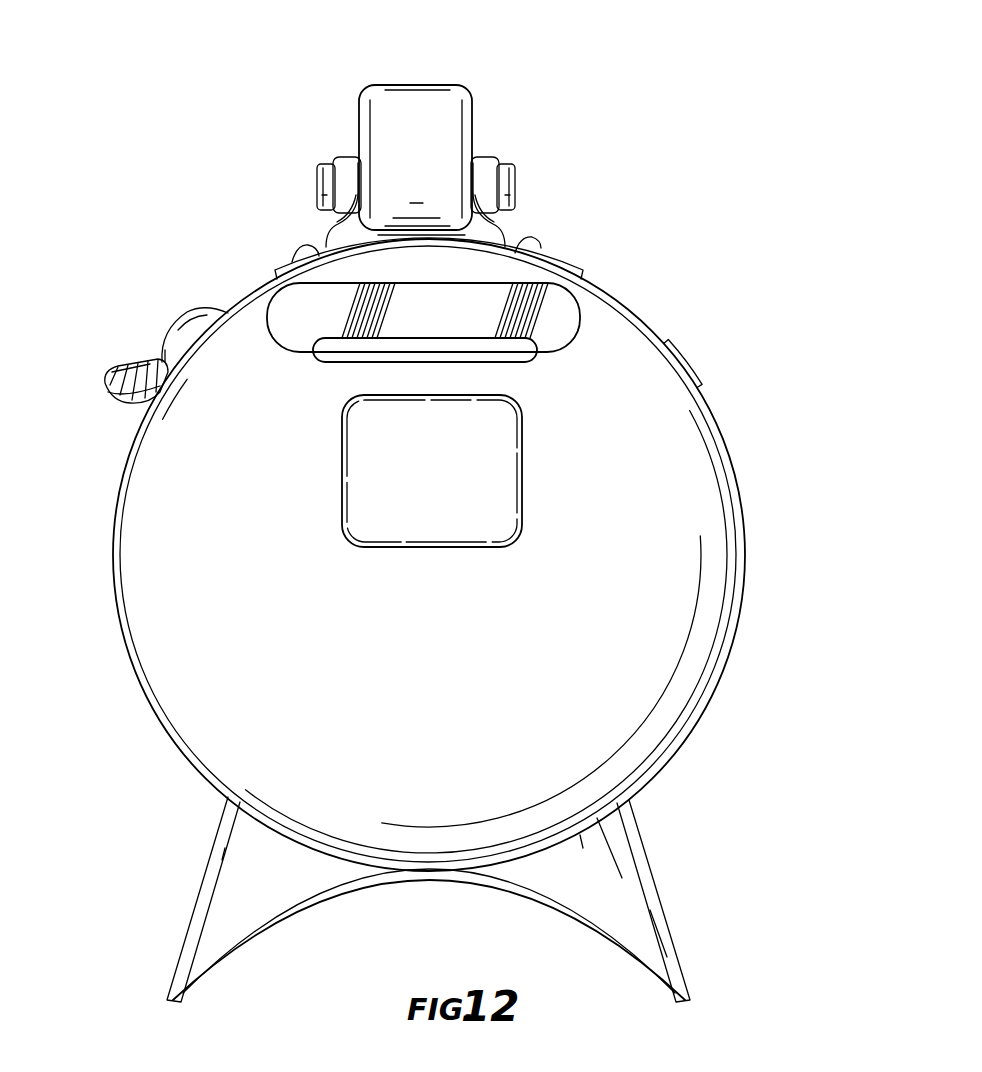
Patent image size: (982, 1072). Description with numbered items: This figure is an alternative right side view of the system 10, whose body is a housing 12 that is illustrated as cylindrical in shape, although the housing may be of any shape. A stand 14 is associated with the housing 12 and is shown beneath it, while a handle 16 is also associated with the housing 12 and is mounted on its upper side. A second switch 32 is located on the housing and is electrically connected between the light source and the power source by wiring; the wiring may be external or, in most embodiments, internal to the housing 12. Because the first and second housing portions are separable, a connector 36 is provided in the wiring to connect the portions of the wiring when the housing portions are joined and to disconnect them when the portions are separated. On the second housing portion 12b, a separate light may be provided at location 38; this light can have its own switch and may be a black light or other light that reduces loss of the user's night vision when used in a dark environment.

The system 10 is at (526, 58).
The housing 12 is at (754, 500).
The second housing portion 12b is at (142, 510).
The stand 14 is at (637, 862).
The handle 16 is at (388, 85).
The second switch 32 is at (203, 310).
The connector 36 is at (122, 365).
The location 38 is at (575, 300).